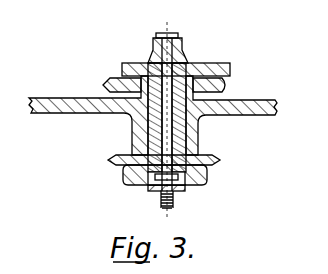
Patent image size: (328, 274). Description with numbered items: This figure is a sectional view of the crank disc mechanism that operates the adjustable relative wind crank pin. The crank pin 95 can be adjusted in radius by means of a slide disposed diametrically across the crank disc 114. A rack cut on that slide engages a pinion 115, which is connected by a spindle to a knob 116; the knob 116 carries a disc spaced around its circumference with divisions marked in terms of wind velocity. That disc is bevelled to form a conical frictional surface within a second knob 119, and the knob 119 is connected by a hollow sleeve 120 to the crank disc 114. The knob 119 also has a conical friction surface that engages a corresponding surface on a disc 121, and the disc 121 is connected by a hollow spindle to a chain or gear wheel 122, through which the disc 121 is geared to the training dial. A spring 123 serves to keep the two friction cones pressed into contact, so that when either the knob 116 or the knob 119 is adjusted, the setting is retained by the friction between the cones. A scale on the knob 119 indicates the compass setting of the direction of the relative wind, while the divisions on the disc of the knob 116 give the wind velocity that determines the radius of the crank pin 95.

The crank pin 95 is at (160, 200).
The crank disc 114 is at (205, 176).
The pinion 115 is at (178, 187).
The knob 116 is at (183, 55).
The knob 119 is at (207, 70).
The hollow sleeve 120 is at (177, 142).
The disc 121 is at (105, 86).
The chain or gear wheel 122 is at (117, 160).
The spring 123 is at (178, 37).